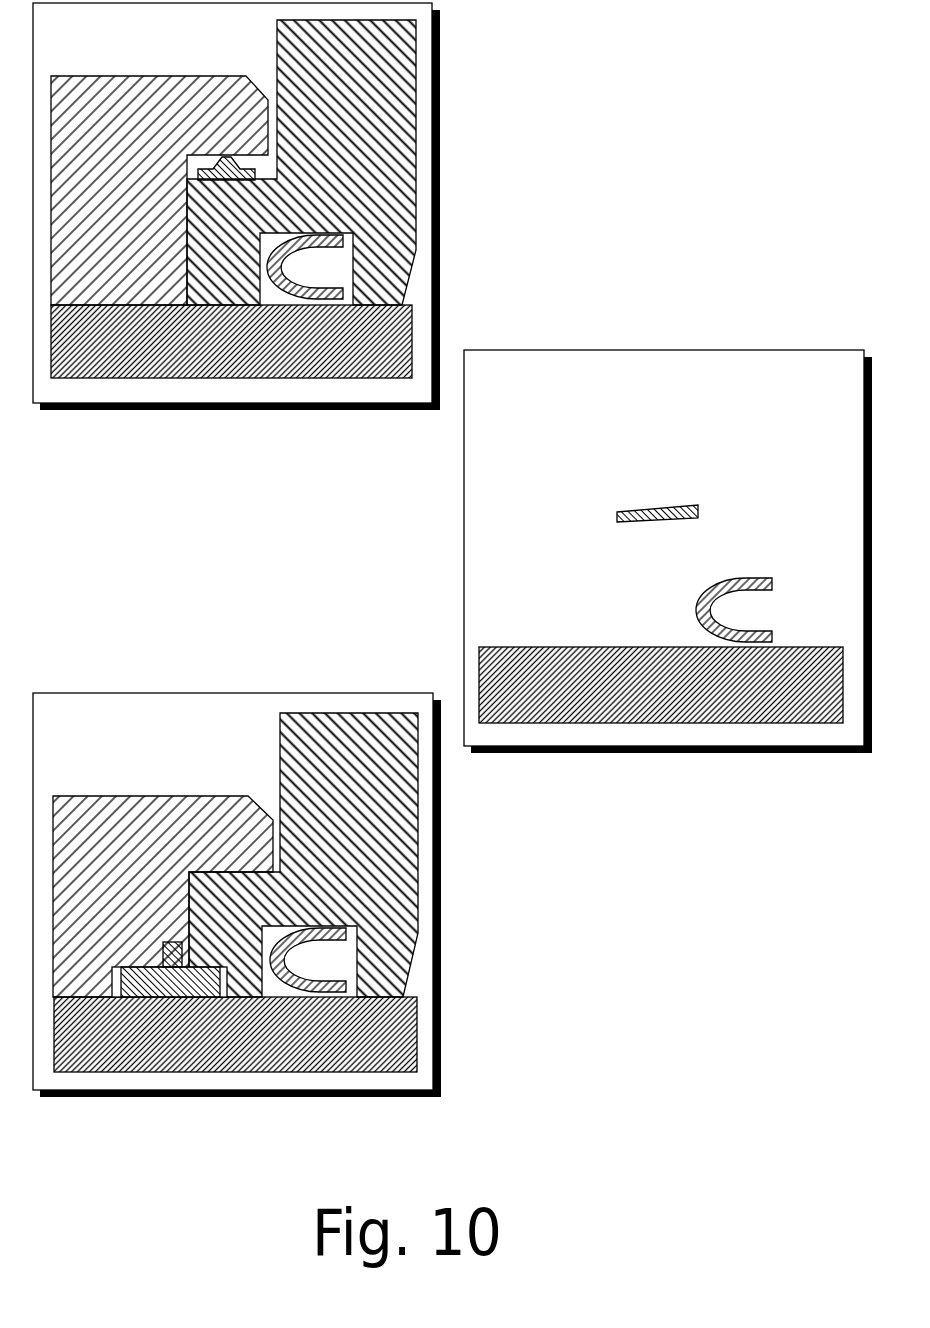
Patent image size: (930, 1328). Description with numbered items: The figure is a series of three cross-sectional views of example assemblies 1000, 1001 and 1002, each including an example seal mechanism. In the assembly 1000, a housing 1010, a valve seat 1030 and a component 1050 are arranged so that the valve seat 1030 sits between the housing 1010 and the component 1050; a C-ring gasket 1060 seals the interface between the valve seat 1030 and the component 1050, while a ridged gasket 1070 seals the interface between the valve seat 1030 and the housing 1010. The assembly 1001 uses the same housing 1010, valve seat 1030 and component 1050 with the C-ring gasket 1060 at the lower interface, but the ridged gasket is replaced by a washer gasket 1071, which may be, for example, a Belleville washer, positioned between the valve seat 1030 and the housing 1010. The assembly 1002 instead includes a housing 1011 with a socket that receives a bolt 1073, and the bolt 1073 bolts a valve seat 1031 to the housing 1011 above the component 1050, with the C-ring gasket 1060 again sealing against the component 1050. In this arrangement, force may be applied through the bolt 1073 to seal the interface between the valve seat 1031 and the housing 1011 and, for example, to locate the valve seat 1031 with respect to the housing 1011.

The assembly 1000 is at (146, 51).
The assembly 1001 is at (571, 396).
The assembly 1002 is at (143, 753).
The housing 1010 is at (153, 173).
The housing 1011 is at (157, 865).
The valve seat 1030 is at (381, 131).
The valve seat 1031 is at (383, 841).
The component 1050 is at (263, 351).
The C-ring gasket 1060 is at (351, 280).
The ridged gasket 1070 is at (226, 156).
The washer gasket 1071 is at (662, 510).
The bolt 1073 is at (157, 966).